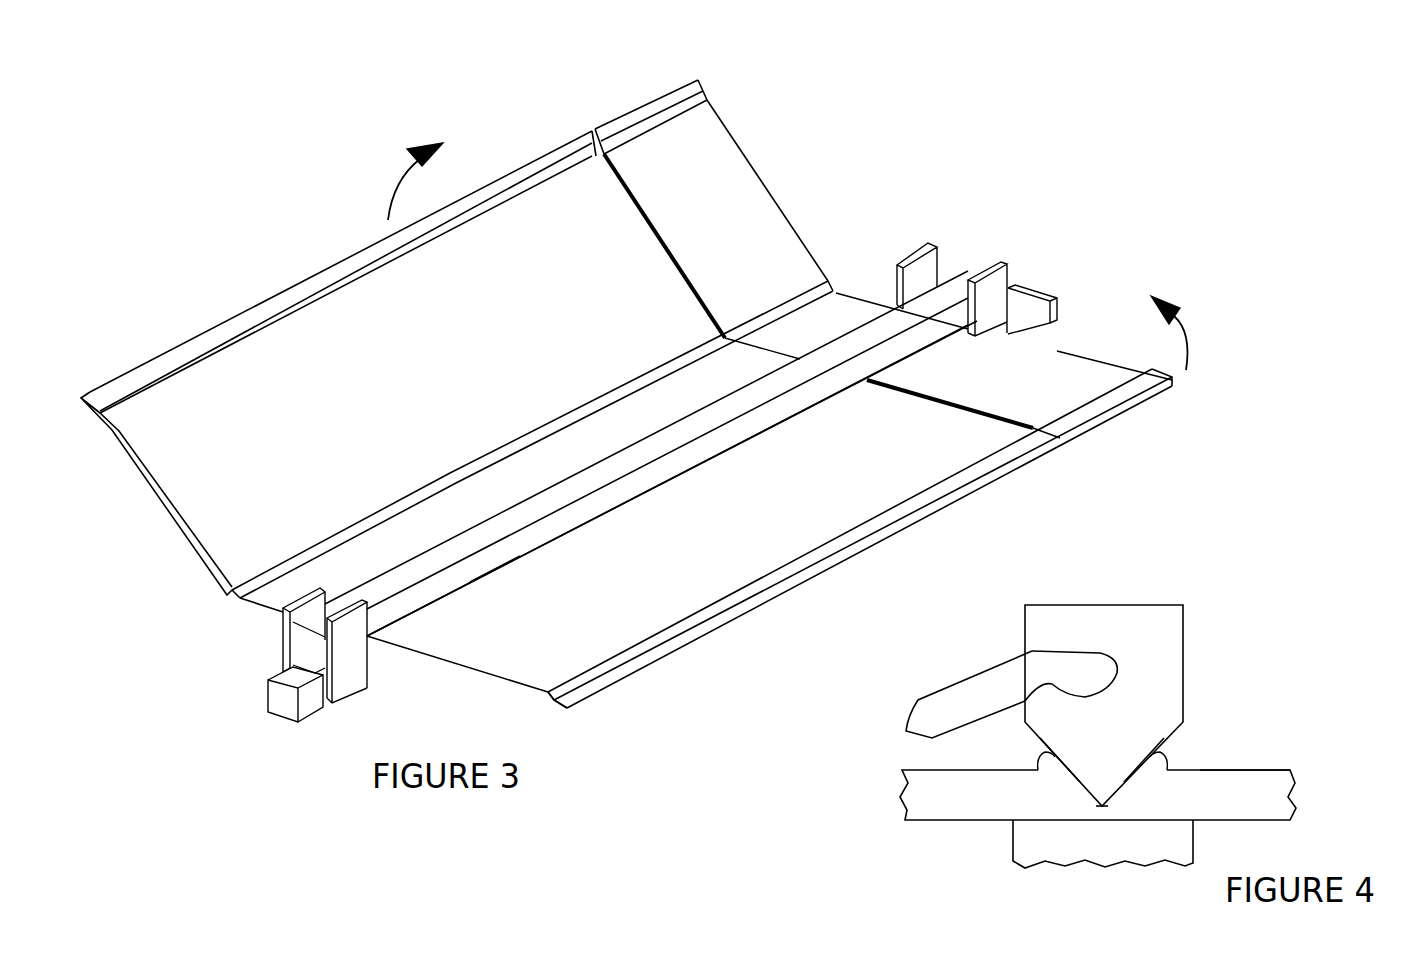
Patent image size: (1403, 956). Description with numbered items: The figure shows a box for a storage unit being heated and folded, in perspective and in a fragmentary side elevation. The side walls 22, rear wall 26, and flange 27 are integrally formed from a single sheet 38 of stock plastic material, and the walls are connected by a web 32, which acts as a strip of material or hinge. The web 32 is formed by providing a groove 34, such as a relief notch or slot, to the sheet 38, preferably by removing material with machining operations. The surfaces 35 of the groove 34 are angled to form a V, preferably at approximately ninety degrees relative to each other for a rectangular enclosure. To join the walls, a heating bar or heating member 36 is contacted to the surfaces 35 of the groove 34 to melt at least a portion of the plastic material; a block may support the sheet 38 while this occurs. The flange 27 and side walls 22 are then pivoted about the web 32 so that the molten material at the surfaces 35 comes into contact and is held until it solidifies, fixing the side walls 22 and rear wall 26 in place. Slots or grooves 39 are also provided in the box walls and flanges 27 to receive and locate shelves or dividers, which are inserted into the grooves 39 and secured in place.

In FIG. 3, the side walls 22 is at (386, 413).
In FIG. 3, the rear wall 26 is at (543, 481).
In FIG. 3, the flange 27 is at (700, 85).
In FIG. 3, the groove 34 is at (232, 340).
In FIG. 4, the groove 34 is at (1060, 794).
In FIG. 3, the heating member 36 is at (487, 565).
In FIG. 4, the heating member 36 is at (1103, 605).
In FIG. 3, the grooves 39 is at (652, 237).
In FIG. 4, the grooves 39 is at (1193, 838).
In FIG. 4, the surfaces 35 is at (1066, 758).
In FIG. 4, the web 32 is at (1105, 812).
In FIG. 4, the sheet 38 is at (1290, 792).